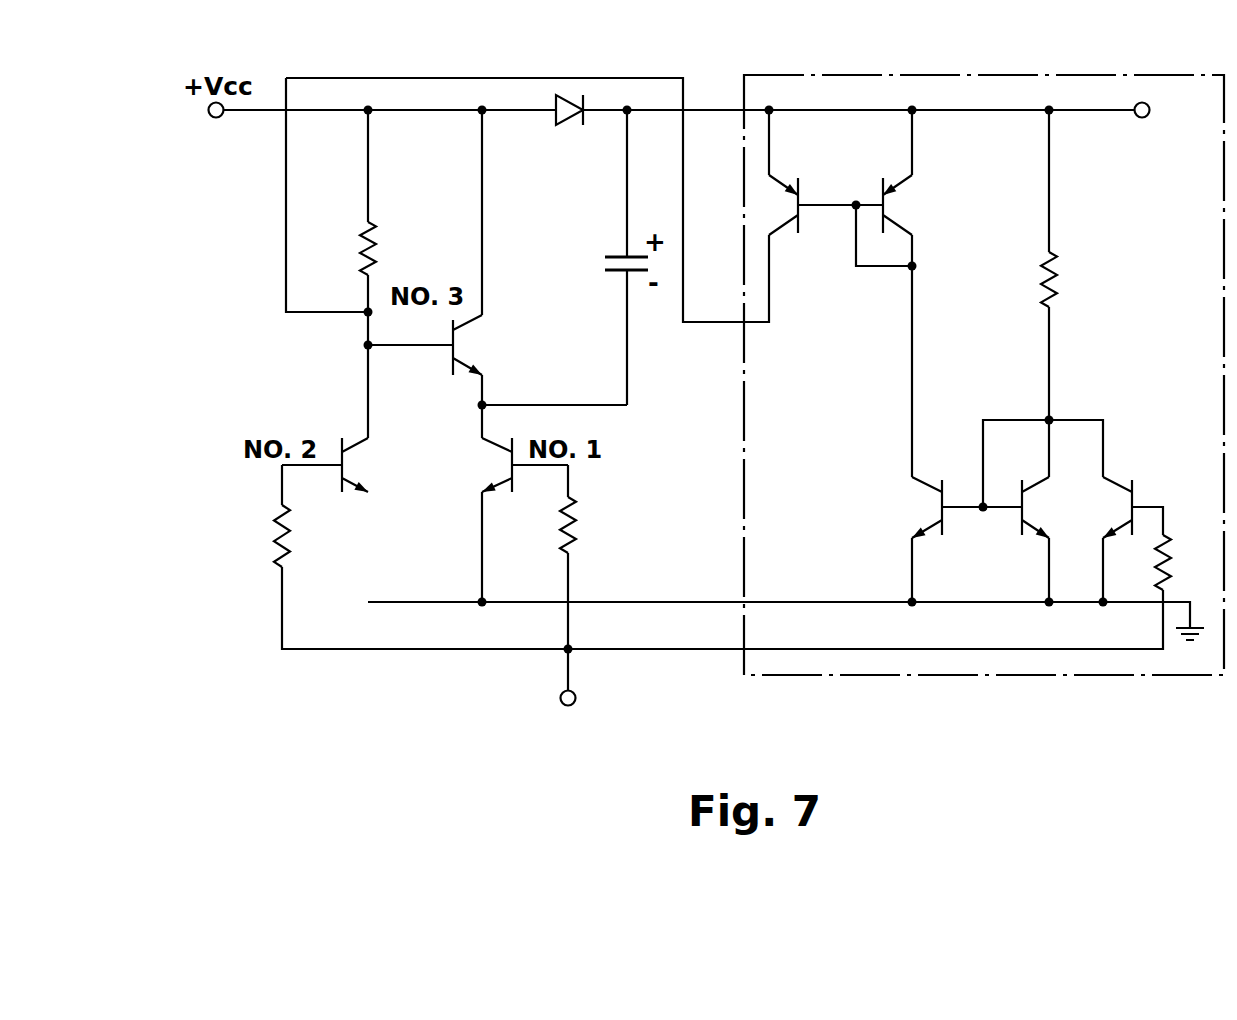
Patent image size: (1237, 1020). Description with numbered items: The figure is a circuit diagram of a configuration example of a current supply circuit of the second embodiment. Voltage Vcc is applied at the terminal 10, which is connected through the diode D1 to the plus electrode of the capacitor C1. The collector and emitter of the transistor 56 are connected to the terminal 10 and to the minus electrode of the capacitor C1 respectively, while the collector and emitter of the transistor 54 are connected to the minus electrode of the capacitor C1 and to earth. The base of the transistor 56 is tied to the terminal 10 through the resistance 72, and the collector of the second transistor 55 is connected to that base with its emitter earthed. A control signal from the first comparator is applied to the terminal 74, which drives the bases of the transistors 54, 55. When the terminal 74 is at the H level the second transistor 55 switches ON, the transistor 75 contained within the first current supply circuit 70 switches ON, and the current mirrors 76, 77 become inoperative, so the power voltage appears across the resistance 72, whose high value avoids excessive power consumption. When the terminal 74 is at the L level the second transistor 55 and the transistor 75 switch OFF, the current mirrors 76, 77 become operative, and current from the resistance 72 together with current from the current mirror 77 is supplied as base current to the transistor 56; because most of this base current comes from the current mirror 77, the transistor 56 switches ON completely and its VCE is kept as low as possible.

The terminal 10 is at (214, 118).
The resistance 72 is at (362, 275).
The diode D1 is at (562, 125).
The capacitor C1 is at (618, 272).
The transistor 56 is at (449, 372).
The second transistor 55 is at (340, 487).
The transistor 54 is at (487, 443).
The terminal 74 is at (560, 698).
The first current supply circuit 70 is at (744, 662).
The current mirror 77 is at (840, 192).
The current mirror 76 is at (984, 395).
The transistor 75 is at (1152, 506).